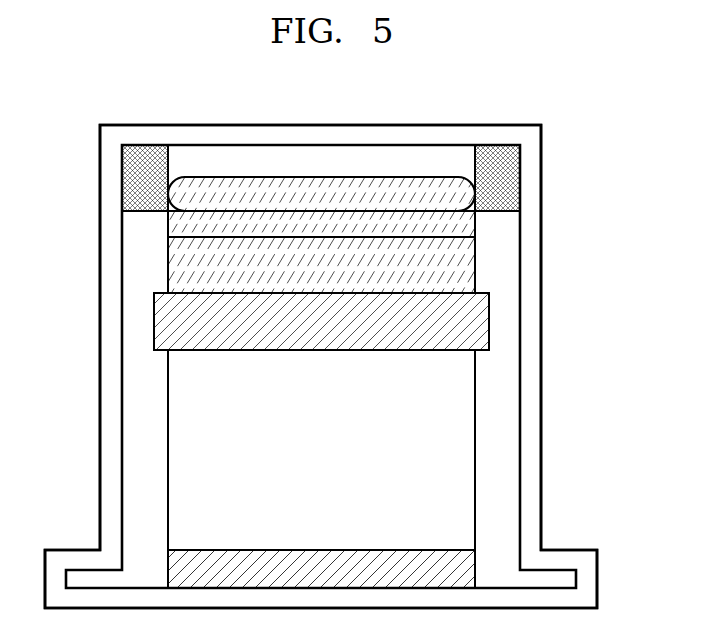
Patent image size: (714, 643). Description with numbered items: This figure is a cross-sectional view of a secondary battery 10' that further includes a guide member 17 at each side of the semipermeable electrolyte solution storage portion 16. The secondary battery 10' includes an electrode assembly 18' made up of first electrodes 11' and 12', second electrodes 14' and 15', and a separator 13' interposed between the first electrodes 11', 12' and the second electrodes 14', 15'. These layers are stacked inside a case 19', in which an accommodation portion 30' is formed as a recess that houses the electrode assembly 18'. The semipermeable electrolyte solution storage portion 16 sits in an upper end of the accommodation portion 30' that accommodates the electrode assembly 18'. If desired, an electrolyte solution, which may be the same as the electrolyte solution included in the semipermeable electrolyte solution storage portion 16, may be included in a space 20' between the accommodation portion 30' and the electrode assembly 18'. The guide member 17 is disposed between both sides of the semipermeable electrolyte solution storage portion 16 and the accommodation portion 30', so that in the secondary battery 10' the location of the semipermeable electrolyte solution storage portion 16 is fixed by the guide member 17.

The secondary battery 10' is at (349, 328).
The first electrode 11' is at (385, 544).
The first electrode 12' is at (385, 450).
The separator 13' is at (378, 321).
The second electrode 14' is at (385, 265).
The second electrode 15' is at (385, 223).
The semipermeable electrolyte solution storage portion 16 is at (452, 192).
The guide member 17 is at (500, 159).
The electrode assembly 18' is at (408, 399).
The case 19' is at (321, 337).
The space 20' is at (539, 450).
The accommodation portion 30' is at (321, 327).